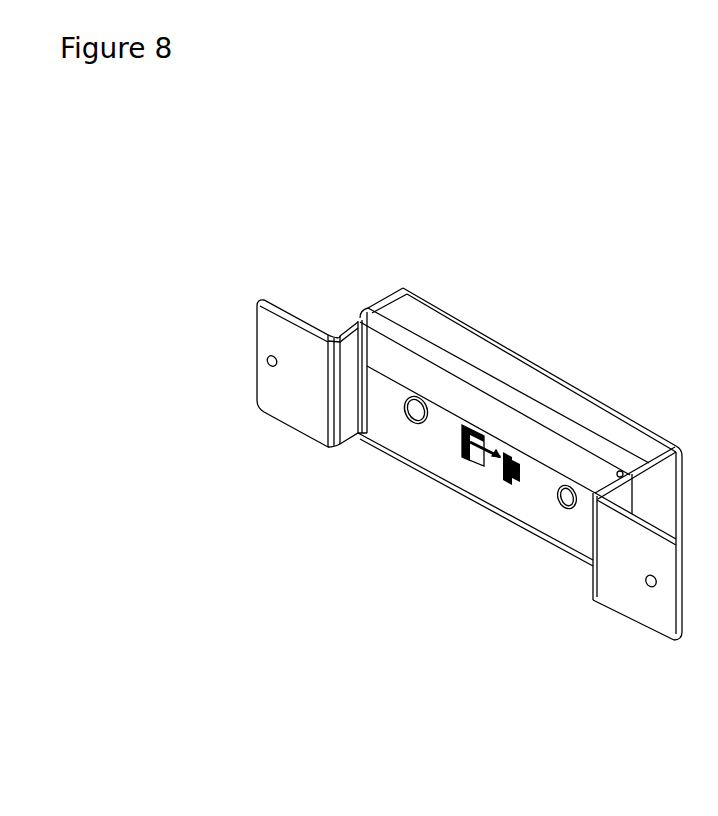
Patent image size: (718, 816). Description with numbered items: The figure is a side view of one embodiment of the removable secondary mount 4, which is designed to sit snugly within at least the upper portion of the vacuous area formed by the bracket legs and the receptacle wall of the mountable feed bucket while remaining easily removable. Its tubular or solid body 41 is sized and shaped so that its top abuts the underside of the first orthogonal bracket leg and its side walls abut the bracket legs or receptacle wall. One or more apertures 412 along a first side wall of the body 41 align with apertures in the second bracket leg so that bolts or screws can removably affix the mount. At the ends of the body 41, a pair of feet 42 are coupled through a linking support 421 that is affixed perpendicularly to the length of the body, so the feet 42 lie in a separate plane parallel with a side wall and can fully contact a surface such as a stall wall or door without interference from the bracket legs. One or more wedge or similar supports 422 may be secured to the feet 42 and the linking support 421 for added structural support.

The removable secondary mount 4 is at (328, 240).
The tubular or solid body 41 is at (528, 378).
The apertures 412 is at (568, 505).
The linking support 421 is at (350, 412).
The feet 42 is at (624, 565).
The wedge or similar supports 422 is at (650, 595).